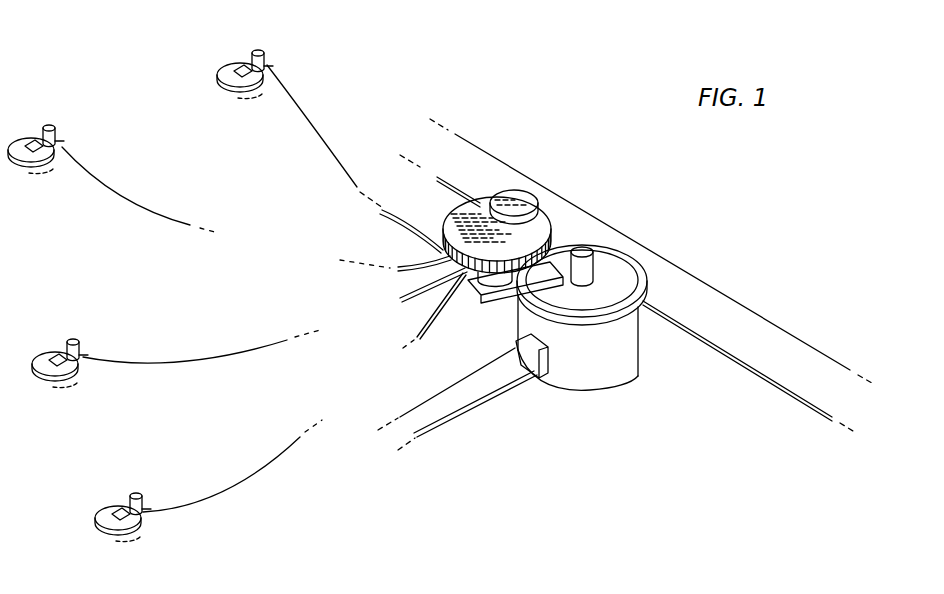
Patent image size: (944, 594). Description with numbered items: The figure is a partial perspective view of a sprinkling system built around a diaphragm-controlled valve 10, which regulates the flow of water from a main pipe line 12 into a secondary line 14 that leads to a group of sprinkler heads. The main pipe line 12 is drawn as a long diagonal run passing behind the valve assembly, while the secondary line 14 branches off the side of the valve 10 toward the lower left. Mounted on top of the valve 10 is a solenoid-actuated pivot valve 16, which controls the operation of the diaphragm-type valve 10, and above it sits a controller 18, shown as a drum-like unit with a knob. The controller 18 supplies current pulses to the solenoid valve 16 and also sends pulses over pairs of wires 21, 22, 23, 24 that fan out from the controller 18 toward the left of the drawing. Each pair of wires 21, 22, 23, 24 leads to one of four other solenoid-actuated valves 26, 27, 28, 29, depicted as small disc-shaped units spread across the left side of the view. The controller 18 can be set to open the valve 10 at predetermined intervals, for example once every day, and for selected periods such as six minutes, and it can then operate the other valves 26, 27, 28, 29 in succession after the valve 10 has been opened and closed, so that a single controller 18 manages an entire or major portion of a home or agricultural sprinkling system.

The diaphragm-controlled valve 10 is at (605, 378).
The main pipe line 12 is at (758, 315).
The secondary line 14 is at (452, 413).
The solenoid-actuated pivot valve 16 is at (495, 282).
The controller 18 is at (543, 203).
The pair of wires 21 is at (277, 452).
The pair of wires 22 is at (262, 348).
The pair of wires 23 is at (192, 225).
The pair of wires 24 is at (352, 183).
The solenoid-actuated valve 26 is at (142, 493).
The solenoid-actuated valve 27 is at (78, 343).
The solenoid-actuated valve 28 is at (55, 132).
The solenoid-actuated valve 29 is at (252, 50).